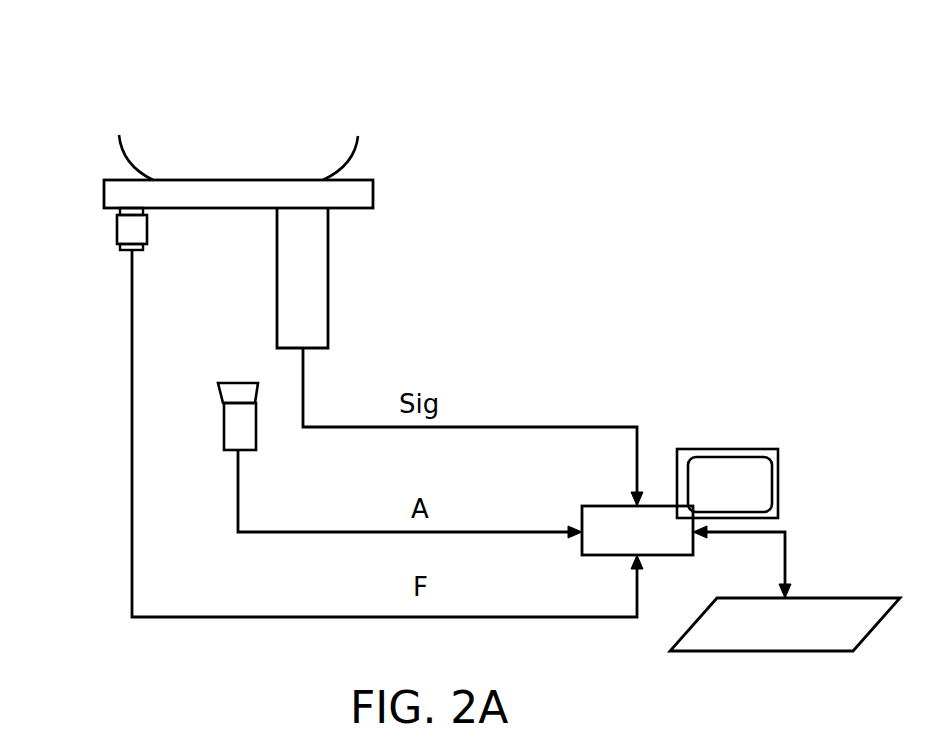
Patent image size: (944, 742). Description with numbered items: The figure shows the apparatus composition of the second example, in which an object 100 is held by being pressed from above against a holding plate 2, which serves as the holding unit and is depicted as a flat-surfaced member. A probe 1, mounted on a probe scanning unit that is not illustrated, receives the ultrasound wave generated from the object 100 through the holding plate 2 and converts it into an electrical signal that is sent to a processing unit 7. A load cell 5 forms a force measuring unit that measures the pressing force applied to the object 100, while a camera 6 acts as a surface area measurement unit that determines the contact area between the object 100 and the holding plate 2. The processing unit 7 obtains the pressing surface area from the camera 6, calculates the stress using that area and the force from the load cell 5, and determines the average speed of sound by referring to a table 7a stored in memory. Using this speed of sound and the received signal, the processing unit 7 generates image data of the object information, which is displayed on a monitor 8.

The object 100 is at (227, 142).
The holding plate 2 is at (362, 187).
The probe 1 is at (325, 250).
The load cell 5 is at (118, 237).
The camera 6 is at (228, 443).
The processing unit 7 is at (637, 530).
The table 7a is at (785, 624).
The monitor 8 is at (717, 468).